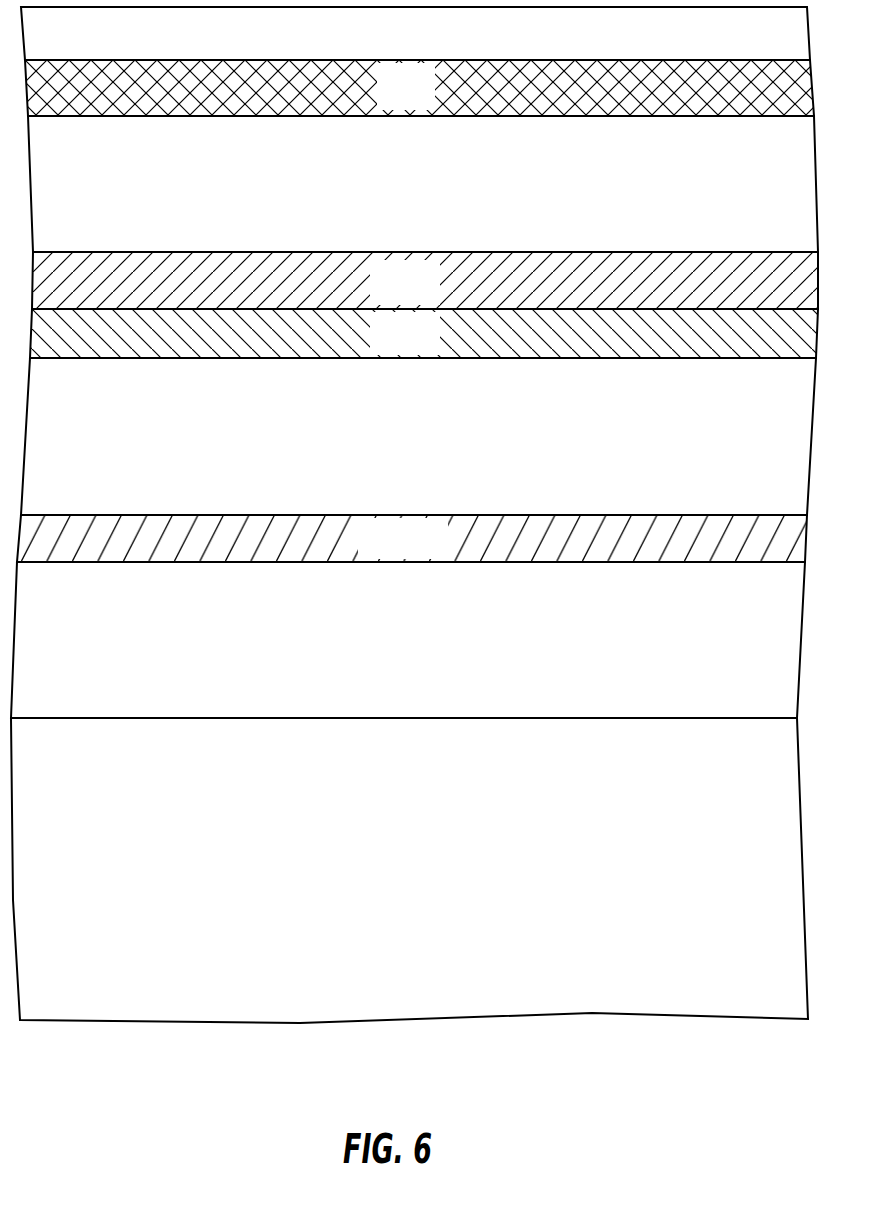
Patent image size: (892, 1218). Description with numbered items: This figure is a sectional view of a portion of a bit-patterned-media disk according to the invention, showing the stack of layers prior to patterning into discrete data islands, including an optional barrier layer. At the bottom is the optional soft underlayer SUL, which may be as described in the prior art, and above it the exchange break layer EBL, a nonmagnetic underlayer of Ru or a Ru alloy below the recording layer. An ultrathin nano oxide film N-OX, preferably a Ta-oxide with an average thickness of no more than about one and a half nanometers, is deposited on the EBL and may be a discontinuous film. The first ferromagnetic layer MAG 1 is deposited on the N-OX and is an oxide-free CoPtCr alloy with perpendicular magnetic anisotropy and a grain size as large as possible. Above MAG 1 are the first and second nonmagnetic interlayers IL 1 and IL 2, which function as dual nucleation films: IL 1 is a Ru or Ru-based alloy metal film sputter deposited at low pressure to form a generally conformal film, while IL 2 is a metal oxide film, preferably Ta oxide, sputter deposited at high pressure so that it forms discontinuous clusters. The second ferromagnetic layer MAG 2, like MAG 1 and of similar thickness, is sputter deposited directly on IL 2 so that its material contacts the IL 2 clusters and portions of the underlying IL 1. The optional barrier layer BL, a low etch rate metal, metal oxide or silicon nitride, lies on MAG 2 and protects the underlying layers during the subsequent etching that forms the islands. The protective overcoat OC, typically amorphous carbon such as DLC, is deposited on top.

The protective overcoat OC is at (415, 34).
The barrier layer BL is at (419, 88).
The second ferromagnetic layer MAG 2 is at (423, 184).
The second nonmagnetic interlayer IL 2 is at (425, 280).
The first nonmagnetic interlayer IL 1 is at (424, 333).
The first ferromagnetic layer MAG 1 is at (418, 436).
The nano oxide film N-OX is at (412, 539).
The exchange break layer EBL is at (408, 640).
The soft underlayer SUL is at (409, 870).